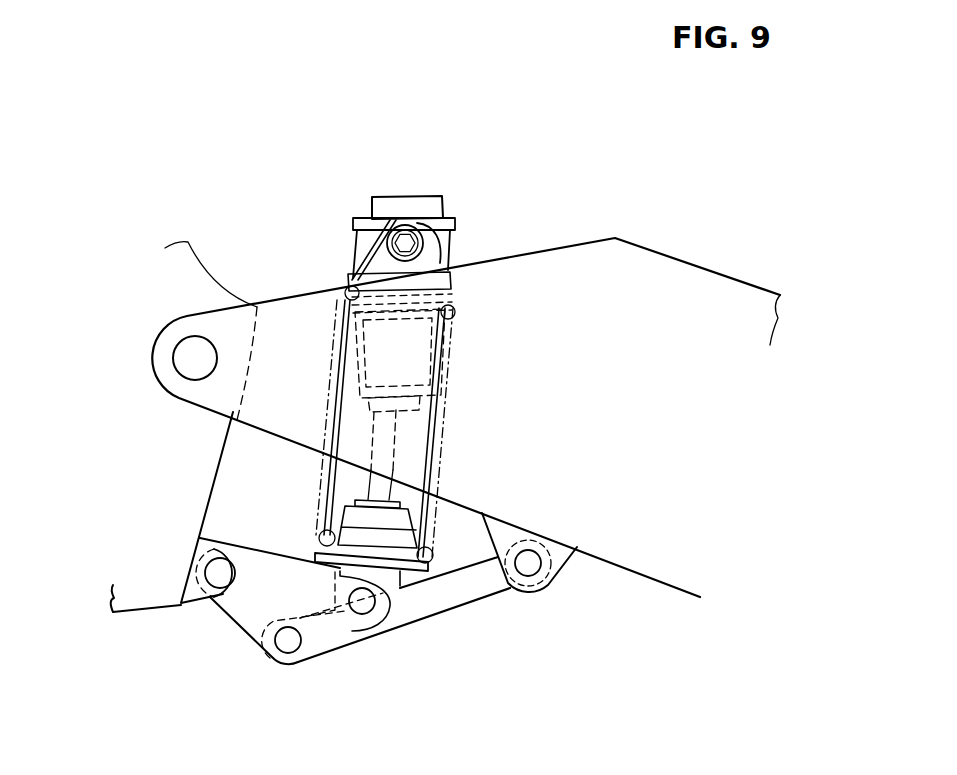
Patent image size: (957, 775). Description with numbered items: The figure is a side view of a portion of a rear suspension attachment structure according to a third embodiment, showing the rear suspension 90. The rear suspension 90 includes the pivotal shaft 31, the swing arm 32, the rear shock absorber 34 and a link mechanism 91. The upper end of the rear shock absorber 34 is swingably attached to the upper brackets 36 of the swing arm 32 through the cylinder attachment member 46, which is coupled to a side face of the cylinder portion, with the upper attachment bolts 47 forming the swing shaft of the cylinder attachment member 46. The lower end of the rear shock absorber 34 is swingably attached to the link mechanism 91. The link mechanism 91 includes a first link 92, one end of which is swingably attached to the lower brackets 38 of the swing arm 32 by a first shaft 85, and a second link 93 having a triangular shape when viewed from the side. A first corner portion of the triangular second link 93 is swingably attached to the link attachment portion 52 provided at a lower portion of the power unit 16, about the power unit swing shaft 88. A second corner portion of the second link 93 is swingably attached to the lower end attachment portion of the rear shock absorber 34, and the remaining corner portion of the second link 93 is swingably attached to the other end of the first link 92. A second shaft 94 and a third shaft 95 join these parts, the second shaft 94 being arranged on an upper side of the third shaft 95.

The rear suspension 90 is at (290, 157).
The rear shock absorber 34 is at (428, 185).
The upper brackets 36 is at (456, 230).
The cylinder attachment member 46 is at (355, 237).
The upper attachment bolts 47 is at (388, 243).
The swing arm 32 is at (695, 263).
The pivotal shaft 31 is at (172, 362).
The power unit 16 is at (113, 626).
The link attachment portion 52 is at (190, 605).
The power unit swing shaft 88 is at (223, 550).
The first shaft 85 is at (531, 556).
The lower brackets 38 is at (560, 568).
The link mechanism 91 is at (492, 634).
The first link 92 is at (430, 617).
The second link 93 is at (233, 622).
The second shaft 94 is at (360, 617).
The third shaft 95 is at (280, 657).